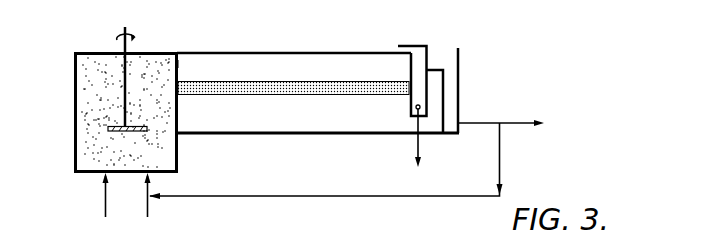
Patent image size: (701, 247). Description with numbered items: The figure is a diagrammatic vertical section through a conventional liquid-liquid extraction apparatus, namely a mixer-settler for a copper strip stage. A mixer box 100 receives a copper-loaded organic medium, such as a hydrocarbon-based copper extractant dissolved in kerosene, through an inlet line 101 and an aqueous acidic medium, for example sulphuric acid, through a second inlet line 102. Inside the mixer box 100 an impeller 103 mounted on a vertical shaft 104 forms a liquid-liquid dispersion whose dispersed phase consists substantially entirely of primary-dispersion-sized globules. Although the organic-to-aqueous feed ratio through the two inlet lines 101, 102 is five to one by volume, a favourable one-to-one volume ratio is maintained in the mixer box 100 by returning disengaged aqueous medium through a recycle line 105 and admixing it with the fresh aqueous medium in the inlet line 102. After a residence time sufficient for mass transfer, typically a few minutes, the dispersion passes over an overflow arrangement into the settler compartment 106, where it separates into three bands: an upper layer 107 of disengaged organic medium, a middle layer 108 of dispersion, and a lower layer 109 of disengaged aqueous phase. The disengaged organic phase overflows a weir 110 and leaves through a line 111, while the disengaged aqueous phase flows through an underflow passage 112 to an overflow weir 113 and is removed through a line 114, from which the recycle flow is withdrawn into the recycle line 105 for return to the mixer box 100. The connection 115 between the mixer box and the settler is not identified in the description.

The mixer box 100 is at (75, 125).
The inlet line 101 is at (104, 195).
The inlet line 102 is at (149, 206).
The impeller 103 is at (147, 130).
The vertical shaft 104 is at (122, 49).
The recycle line 105 is at (315, 196).
The settler compartment 106 is at (281, 137).
The upper layer 107 is at (341, 62).
The middle layer 108 is at (320, 88).
The lower layer 109 is at (306, 116).
The weir 110 is at (409, 62).
The line 111 is at (420, 143).
The underflow passage 112 is at (406, 122).
The overflow weir 113 is at (443, 69).
The line 114 is at (483, 122).
The module inlet 115 is at (180, 66).